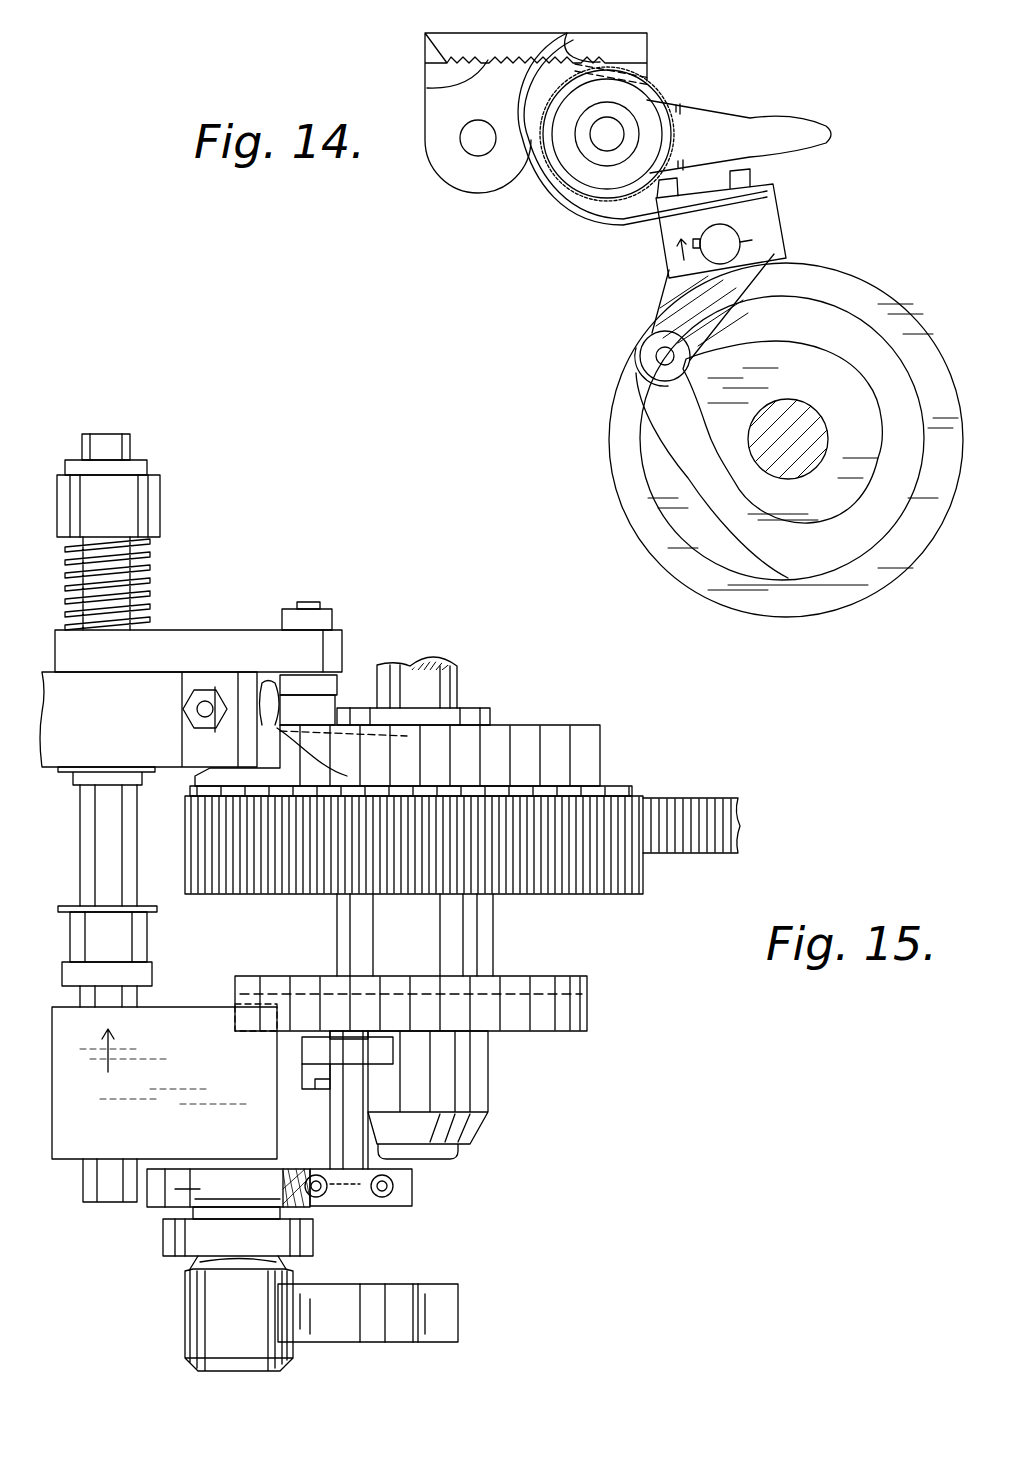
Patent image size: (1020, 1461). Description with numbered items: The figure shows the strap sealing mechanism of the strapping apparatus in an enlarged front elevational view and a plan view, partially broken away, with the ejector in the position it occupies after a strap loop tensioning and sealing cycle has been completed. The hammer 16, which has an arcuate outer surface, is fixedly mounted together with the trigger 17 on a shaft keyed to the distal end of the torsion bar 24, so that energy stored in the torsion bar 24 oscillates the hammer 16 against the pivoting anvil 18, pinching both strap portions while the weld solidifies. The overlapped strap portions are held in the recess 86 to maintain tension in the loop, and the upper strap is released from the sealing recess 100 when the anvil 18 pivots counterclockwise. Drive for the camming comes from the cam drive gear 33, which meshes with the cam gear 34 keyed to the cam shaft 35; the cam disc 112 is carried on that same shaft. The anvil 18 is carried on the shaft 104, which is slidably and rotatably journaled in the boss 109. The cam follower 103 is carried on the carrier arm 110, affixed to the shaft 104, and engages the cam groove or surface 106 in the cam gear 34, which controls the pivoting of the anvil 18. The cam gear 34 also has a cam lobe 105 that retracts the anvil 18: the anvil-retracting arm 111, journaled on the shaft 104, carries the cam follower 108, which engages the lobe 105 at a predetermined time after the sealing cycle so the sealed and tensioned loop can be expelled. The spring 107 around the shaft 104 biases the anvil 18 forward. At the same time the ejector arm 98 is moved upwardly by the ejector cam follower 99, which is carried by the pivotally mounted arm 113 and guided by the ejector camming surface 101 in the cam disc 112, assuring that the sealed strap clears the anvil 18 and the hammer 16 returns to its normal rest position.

In FIG. 15, the hammer 16 is at (289, 1161).
In FIG. 14, the trigger 17 is at (729, 110).
In FIG. 15, the trigger 17 is at (422, 1291).
In FIG. 14, the anvil 18 is at (500, 34).
In FIG. 15, the anvil 18 is at (165, 1016).
In FIG. 14, the torsion bar 24 is at (610, 127).
In FIG. 15, the cam drive gear 33 is at (699, 836).
In FIG. 15, the cam gear 34 is at (595, 878).
In FIG. 14, the cam shaft 35 is at (776, 396).
In FIG. 15, the cam shaft 35 is at (439, 674).
In FIG. 14, the recess 86 is at (419, 82).
In FIG. 14, the ejector arm 98 is at (549, 199).
In FIG. 15, the ejector arm 98 is at (154, 1184).
In FIG. 14, the ejector cam follower 99 is at (630, 368).
In FIG. 15, the ejector cam follower 99 is at (307, 996).
In FIG. 14, the sealing recess 100 is at (617, 64).
In FIG. 14, the ejector camming surface 101 is at (686, 490).
In FIG. 15, the ejector camming surface 101 is at (552, 1024).
In FIG. 15, the cam follower 103 is at (332, 698).
In FIG. 14, the shaft 104 is at (464, 139).
In FIG. 15, the shaft 104 is at (89, 831).
In FIG. 15, the cam lobe 105 is at (269, 744).
In FIG. 15, the cam groove or surface 106 is at (397, 755).
In FIG. 15, the spring 107 is at (140, 544).
In FIG. 15, the cam follower 108 is at (254, 682).
In FIG. 15, the boss 109 is at (139, 964).
In FIG. 15, the carrier arm 110 is at (177, 632).
In FIG. 15, the anvil-retracting arm 111 is at (135, 739).
In FIG. 14, the cam disc 112 is at (708, 572).
In FIG. 15, the cam disc 112 is at (515, 974).
In FIG. 14, the pivotally mounted arm 113 is at (668, 286).
In FIG. 15, the pivotally mounted arm 113 is at (289, 1038).